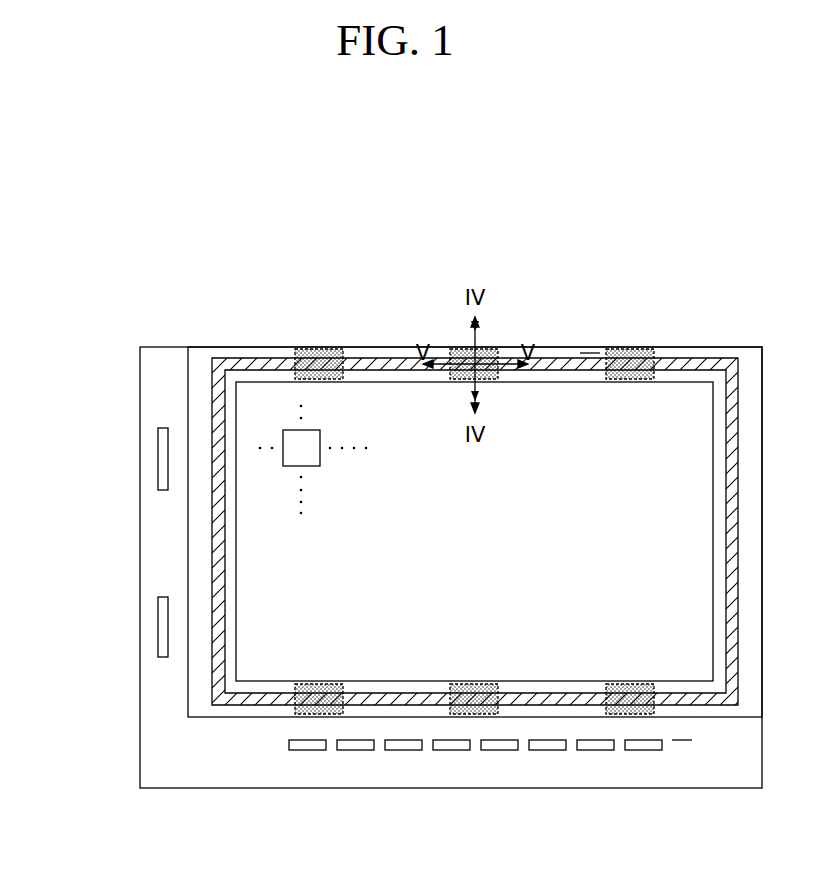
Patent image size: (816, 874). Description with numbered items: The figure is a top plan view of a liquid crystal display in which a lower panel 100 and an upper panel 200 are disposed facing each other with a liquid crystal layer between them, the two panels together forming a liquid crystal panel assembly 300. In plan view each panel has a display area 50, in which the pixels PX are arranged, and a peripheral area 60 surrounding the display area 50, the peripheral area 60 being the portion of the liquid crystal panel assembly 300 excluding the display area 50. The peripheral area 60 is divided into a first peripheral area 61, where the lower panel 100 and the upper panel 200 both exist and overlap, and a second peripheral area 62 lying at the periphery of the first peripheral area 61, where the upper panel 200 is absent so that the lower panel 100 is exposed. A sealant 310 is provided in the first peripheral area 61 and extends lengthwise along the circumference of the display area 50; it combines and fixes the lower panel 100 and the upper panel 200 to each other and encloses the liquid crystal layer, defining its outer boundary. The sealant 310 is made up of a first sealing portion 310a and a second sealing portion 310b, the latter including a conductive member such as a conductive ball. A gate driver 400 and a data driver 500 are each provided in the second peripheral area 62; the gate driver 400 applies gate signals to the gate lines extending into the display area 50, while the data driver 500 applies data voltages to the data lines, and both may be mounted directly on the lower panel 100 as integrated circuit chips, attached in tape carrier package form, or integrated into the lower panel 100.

The display area 50 is at (381, 408).
The peripheral area 60 is at (690, 286).
The first peripheral area 61 is at (590, 353).
The second peripheral area 62 is at (682, 737).
The lower panel 100 is at (140, 562).
The upper panel 200 is at (188, 508).
The liquid crystal panel assembly 300 is at (75, 498).
The sealant 310 is at (232, 276).
The first sealing portion 310a is at (256, 365).
The second sealing portion 310b is at (317, 349).
The gate driver 400 is at (158, 626).
The data driver 500 is at (638, 751).